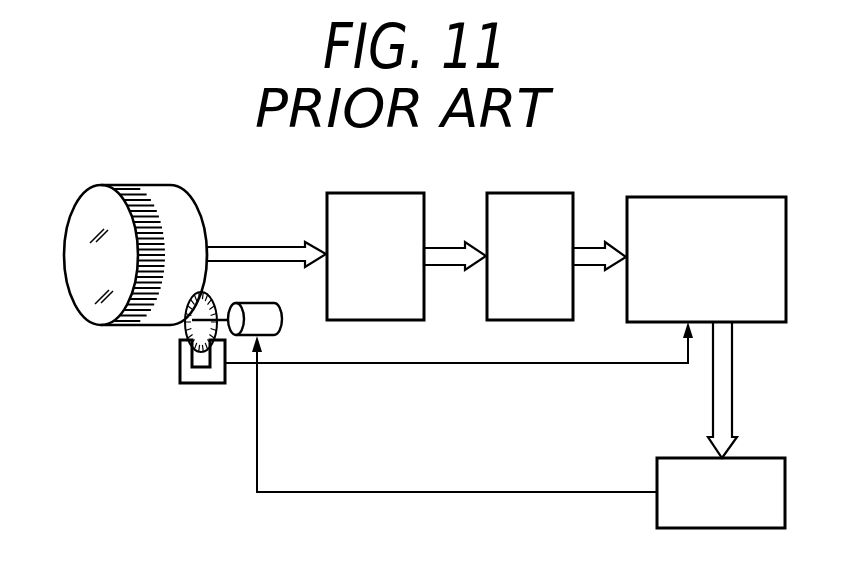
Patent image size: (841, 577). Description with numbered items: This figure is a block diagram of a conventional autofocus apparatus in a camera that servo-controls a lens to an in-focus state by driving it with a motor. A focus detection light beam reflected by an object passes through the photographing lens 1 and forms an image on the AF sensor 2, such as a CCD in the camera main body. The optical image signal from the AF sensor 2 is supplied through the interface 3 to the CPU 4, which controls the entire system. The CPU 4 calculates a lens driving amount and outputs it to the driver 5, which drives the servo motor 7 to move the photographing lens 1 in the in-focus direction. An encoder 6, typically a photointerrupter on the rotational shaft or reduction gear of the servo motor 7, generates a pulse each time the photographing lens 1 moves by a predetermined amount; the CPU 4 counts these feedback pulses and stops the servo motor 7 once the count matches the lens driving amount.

The photographing lens 1 is at (80, 222).
The AF sensor 2 is at (382, 193).
The interface 3 is at (526, 193).
The microcomputer (CPU) 4 is at (733, 197).
The driver 5 is at (752, 458).
The encoder 6 is at (186, 357).
The servo motor 7 is at (282, 324).